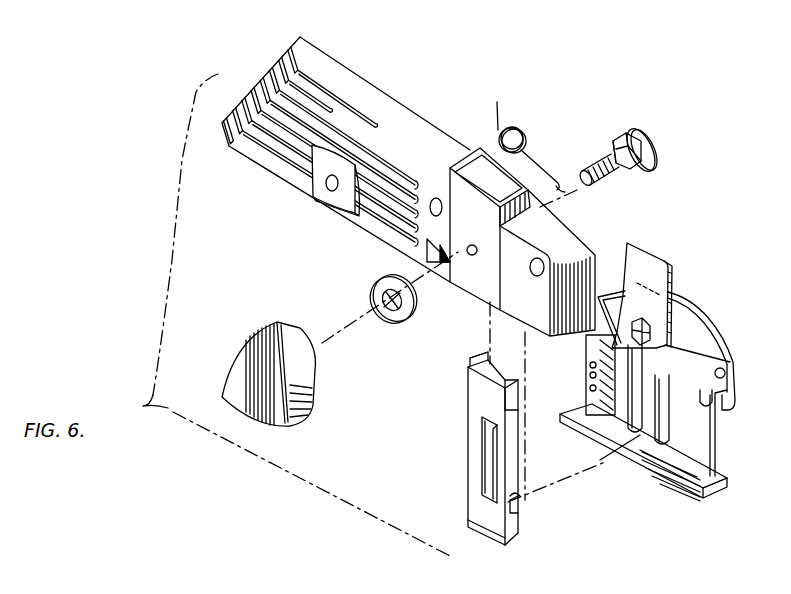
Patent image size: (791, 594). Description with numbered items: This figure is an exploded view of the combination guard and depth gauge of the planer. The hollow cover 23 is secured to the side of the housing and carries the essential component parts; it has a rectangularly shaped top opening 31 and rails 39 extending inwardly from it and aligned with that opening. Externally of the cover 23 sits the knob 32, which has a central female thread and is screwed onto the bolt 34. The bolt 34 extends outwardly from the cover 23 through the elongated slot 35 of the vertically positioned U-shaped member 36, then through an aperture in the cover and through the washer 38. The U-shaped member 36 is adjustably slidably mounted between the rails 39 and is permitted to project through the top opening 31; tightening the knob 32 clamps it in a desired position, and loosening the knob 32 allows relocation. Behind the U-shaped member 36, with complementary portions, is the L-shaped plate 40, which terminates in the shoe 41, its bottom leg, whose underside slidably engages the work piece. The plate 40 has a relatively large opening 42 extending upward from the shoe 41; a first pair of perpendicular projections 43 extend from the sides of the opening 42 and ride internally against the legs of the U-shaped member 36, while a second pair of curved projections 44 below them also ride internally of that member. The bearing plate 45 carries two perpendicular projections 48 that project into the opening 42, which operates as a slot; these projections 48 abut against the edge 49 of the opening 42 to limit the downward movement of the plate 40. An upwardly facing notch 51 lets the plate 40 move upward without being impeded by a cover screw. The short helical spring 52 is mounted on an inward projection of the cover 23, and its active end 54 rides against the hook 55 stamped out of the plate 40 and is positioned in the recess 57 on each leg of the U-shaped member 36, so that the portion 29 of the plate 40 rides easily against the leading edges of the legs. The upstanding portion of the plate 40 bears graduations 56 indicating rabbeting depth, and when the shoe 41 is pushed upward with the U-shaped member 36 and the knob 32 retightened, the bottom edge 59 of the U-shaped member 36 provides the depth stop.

The hollow cover 23 is at (397, 113).
The top opening 31 is at (483, 177).
The helical spring 52 is at (514, 124).
The active end 54 is at (550, 197).
The bolt 34 is at (592, 163).
The washer 38 is at (395, 312).
The knob 32 is at (298, 420).
The U-shaped member 36 is at (478, 397).
The elongated slot 35 is at (488, 460).
The bottom edge 59 is at (485, 532).
The recess 57 is at (513, 492).
The rails 39 is at (507, 382).
The portion 29 is at (643, 258).
The hook 55 is at (634, 322).
The bearing plate 45 is at (680, 310).
The edge 49 is at (687, 330).
The perpendicular projections 48 is at (607, 333).
The upwardly facing notch 51 is at (712, 412).
The opening 42 is at (585, 410).
The first pair of perpendicular projections 43 is at (613, 353).
The graduations 56 is at (598, 360).
The second pair of curved projections 44 is at (638, 437).
The L-shaped plate 40 is at (695, 448).
The shoe 41 is at (687, 478).